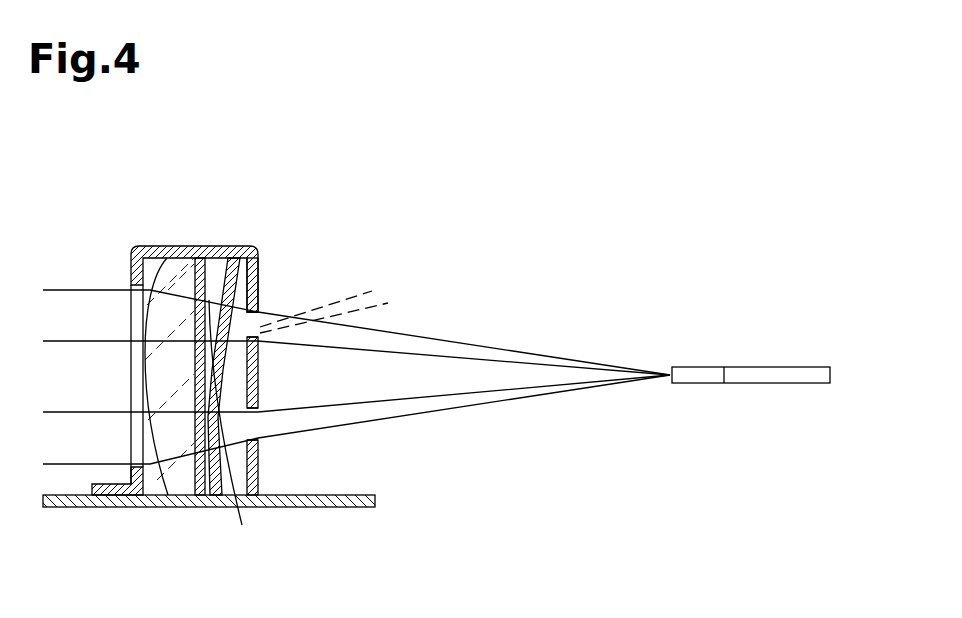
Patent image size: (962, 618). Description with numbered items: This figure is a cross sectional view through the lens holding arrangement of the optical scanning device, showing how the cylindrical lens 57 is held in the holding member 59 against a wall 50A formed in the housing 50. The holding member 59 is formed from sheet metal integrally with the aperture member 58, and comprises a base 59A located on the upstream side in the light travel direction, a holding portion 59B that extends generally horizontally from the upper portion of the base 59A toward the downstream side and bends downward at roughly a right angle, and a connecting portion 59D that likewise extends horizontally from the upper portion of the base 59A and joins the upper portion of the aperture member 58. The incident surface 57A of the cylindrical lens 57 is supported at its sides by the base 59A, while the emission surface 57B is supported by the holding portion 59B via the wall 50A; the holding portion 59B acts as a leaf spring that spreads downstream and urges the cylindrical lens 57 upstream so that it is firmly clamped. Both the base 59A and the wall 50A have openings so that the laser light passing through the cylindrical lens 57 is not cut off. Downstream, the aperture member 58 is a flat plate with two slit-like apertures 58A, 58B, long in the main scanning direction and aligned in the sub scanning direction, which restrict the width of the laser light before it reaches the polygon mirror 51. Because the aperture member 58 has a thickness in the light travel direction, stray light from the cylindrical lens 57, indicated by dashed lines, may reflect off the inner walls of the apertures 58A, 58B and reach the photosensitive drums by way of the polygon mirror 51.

The housing 50 is at (82, 497).
The wall 50A is at (210, 372).
The polygon mirror 51 is at (744, 367).
The cylindrical lens 57 is at (154, 488).
The incident surface 57A is at (148, 310).
The emission surface 57B is at (248, 427).
The aperture member 58 is at (260, 275).
The aperture 58A is at (264, 318).
The aperture 58B is at (264, 428).
The holding member 59 is at (147, 247).
The base 59A is at (131, 277).
The holding portion 59B is at (230, 270).
The connecting portion 59D is at (247, 248).